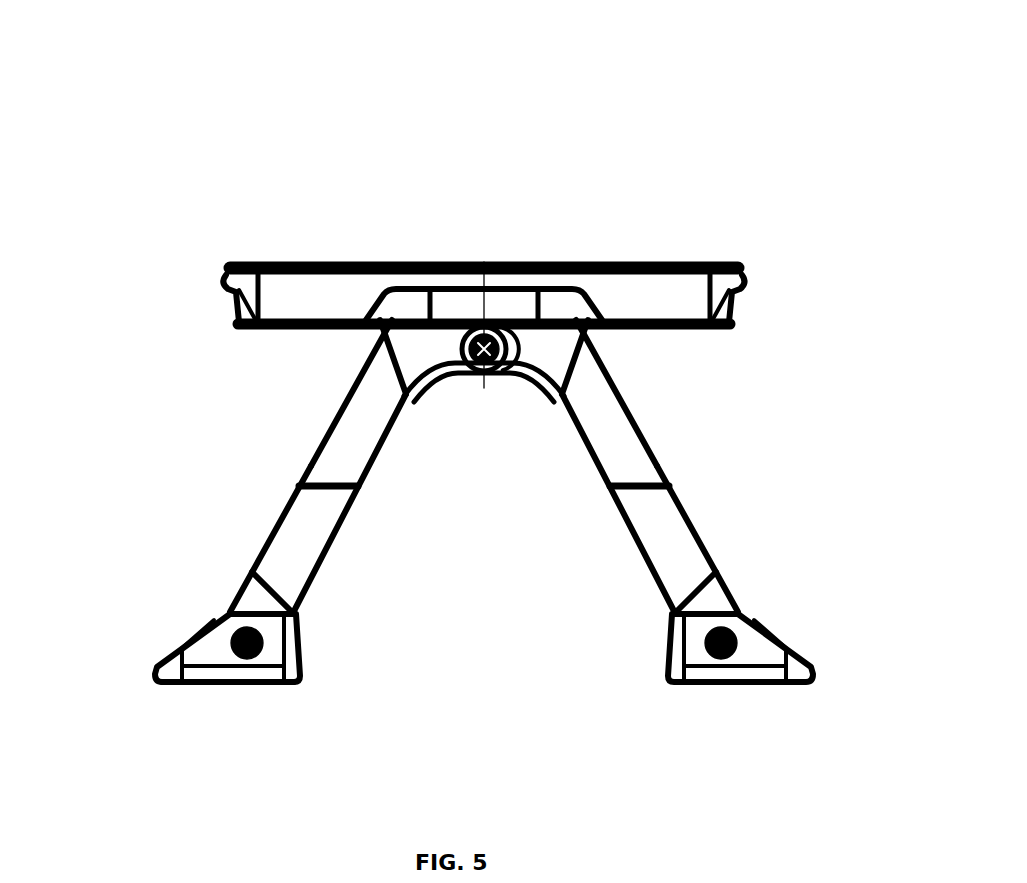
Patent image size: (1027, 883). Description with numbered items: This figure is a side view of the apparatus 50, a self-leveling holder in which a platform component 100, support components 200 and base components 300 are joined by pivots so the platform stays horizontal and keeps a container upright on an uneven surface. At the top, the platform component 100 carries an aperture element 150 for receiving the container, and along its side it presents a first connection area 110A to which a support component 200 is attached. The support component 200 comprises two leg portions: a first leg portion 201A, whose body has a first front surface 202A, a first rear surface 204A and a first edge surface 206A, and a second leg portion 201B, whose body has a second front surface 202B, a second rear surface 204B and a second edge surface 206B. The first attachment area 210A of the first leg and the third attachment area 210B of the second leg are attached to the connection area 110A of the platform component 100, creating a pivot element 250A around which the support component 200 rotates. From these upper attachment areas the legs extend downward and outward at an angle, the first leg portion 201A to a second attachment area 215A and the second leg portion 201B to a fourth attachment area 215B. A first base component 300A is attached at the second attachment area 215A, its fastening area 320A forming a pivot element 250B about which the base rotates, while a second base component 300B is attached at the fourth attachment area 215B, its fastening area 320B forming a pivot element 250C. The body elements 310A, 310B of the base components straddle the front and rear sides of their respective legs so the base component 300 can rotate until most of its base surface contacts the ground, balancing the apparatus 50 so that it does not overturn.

The apparatus 50 is at (210, 130).
The platform component 100 is at (257, 287).
The first connection area 110A is at (543, 308).
The aperture element 150 is at (492, 211).
The support component 200 is at (418, 364).
The first leg portion 201A is at (355, 426).
The second leg portion 201B is at (598, 416).
The first front surface 202A is at (296, 545).
The second front surface 202B is at (685, 548).
The first rear surface 204A is at (357, 530).
The second rear surface 204B is at (598, 517).
The first edge surface 206A is at (305, 484).
The second edge surface 206B is at (668, 486).
The first attachment area 210A is at (460, 348).
The third attachment area 210B is at (510, 348).
The second attachment area 215A is at (210, 630).
The fourth attachment area 215B is at (765, 653).
The pivot element 250A is at (505, 324).
The pivot element 250B is at (265, 641).
The pivot element 250C is at (703, 645).
The base component 300 is at (160, 676).
The first base component 300A is at (200, 686).
The second base component 300B is at (690, 686).
The body element 310A is at (275, 663).
The body element 310B is at (793, 667).
The fastening area 320A is at (246, 662).
The fastening area 320B is at (727, 665).